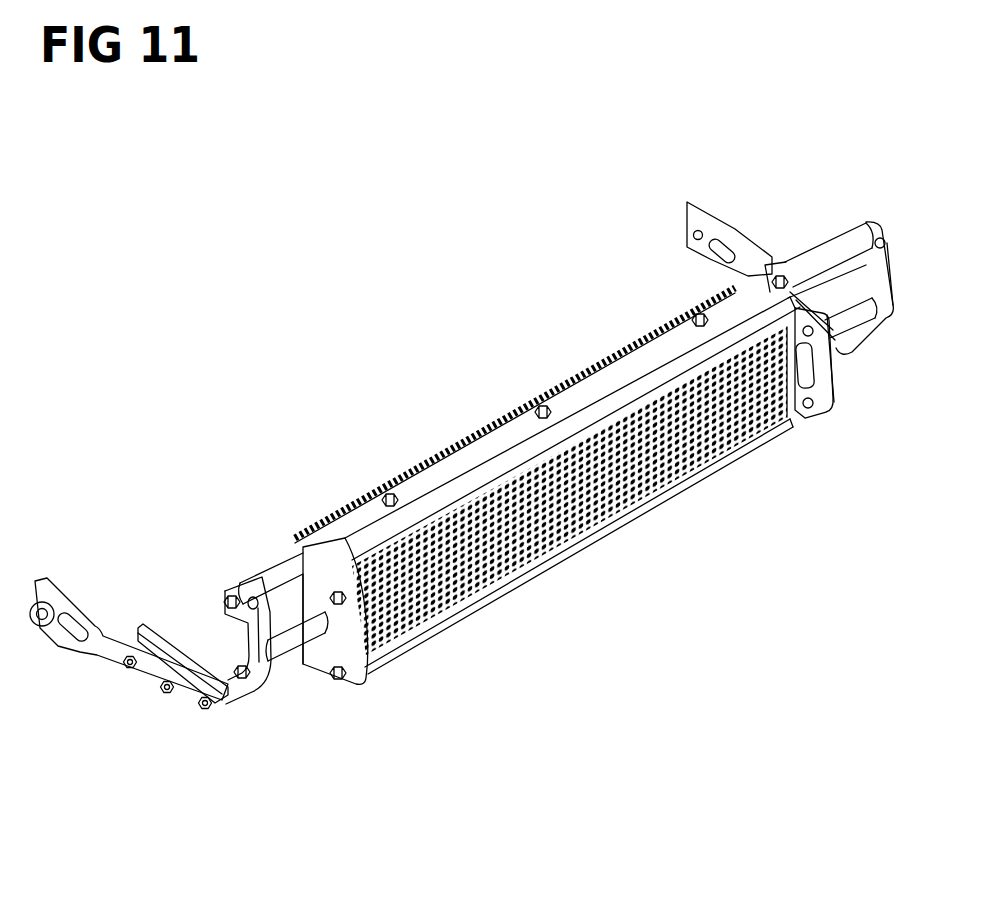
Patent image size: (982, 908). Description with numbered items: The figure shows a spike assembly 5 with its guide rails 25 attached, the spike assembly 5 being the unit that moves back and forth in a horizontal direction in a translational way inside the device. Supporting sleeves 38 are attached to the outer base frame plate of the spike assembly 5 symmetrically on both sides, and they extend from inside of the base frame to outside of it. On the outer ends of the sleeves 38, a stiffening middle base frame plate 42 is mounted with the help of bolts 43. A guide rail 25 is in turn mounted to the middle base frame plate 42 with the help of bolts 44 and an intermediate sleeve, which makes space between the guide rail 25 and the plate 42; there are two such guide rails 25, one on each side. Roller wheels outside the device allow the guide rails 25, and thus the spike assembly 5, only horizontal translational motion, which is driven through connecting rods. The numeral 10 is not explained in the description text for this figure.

The spike assembly 5 is at (486, 457).
The heat sink rail 10 is at (463, 437).
The guide rail 25 is at (686, 232).
The supporting sleeve 38 is at (862, 318).
The middle base frame plate 42 is at (885, 298).
The bolt 43 is at (243, 672).
The bolt 44 is at (200, 703).